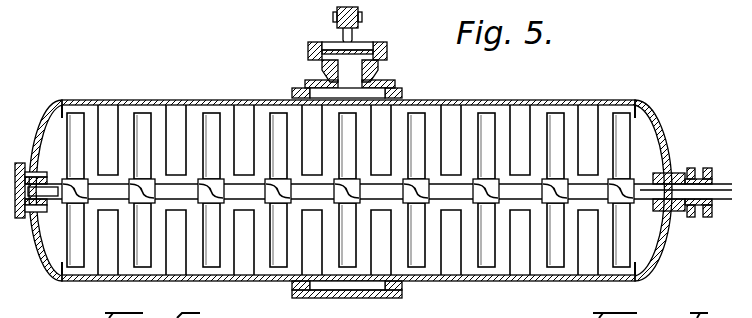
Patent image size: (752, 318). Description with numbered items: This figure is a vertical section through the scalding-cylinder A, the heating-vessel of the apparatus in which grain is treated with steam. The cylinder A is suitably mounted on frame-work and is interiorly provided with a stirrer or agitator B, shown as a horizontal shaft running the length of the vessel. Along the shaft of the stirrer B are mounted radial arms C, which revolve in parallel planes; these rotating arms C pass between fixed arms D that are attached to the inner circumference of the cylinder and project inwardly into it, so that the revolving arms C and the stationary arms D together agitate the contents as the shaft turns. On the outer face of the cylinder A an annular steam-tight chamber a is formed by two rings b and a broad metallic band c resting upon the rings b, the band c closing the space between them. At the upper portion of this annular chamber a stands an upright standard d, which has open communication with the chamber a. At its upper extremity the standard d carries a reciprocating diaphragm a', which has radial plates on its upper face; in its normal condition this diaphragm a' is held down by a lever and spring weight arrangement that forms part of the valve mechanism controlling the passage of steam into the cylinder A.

The scalding-cylinder A is at (350, 179).
The stirrer or agitator B is at (378, 191).
The radial arms C is at (348, 190).
The arms D is at (348, 190).
The annular steam-tight chamber a is at (347, 191).
The reciprocating diaphragm a' is at (347, 33).
The rings b is at (418, 91).
The broad metallic band c is at (350, 190).
The upright standard d is at (352, 71).